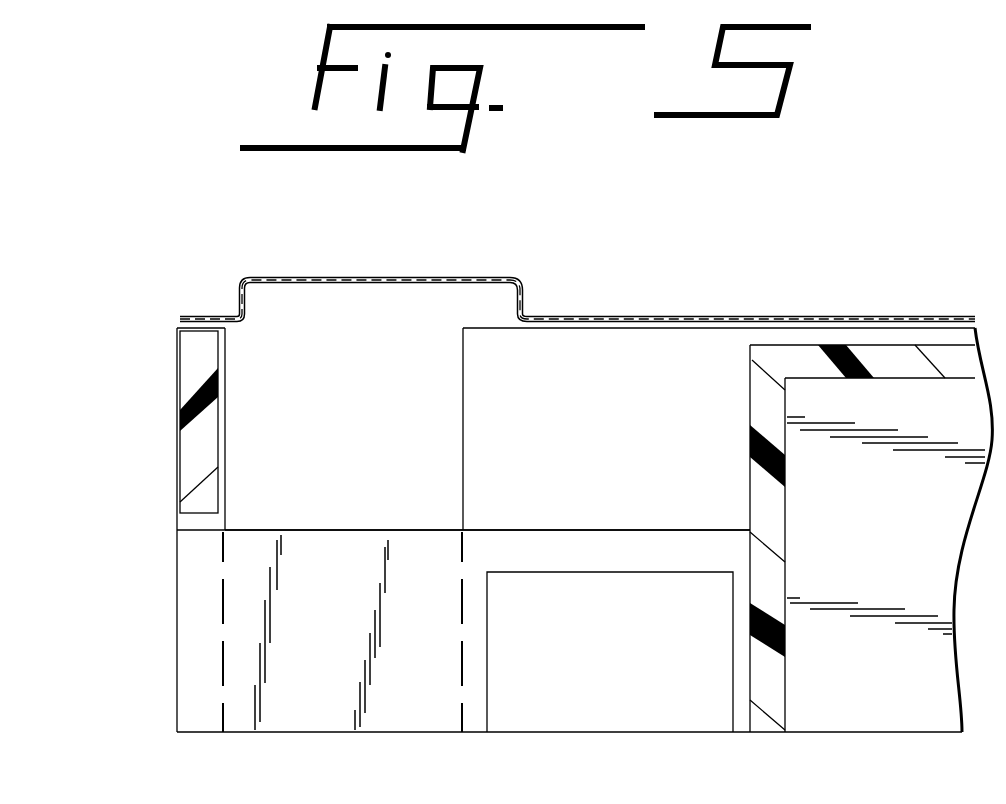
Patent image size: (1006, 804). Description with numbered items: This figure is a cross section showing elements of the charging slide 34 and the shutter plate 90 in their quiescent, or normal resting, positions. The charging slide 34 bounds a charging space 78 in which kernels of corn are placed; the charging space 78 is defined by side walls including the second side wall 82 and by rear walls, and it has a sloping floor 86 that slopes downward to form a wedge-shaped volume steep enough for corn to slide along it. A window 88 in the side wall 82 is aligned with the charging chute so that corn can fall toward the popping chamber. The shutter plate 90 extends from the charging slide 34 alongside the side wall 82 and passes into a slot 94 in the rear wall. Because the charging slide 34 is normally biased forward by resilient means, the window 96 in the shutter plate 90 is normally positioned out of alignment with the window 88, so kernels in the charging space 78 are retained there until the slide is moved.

The charging slide 34 is at (895, 358).
The charging space 78 is at (468, 278).
The second side wall 82 is at (603, 358).
The sloping floor 86 is at (750, 408).
The window 88 is at (272, 373).
The shutter plate 90 is at (404, 545).
The slot 94 is at (188, 520).
The window 96 is at (580, 602).